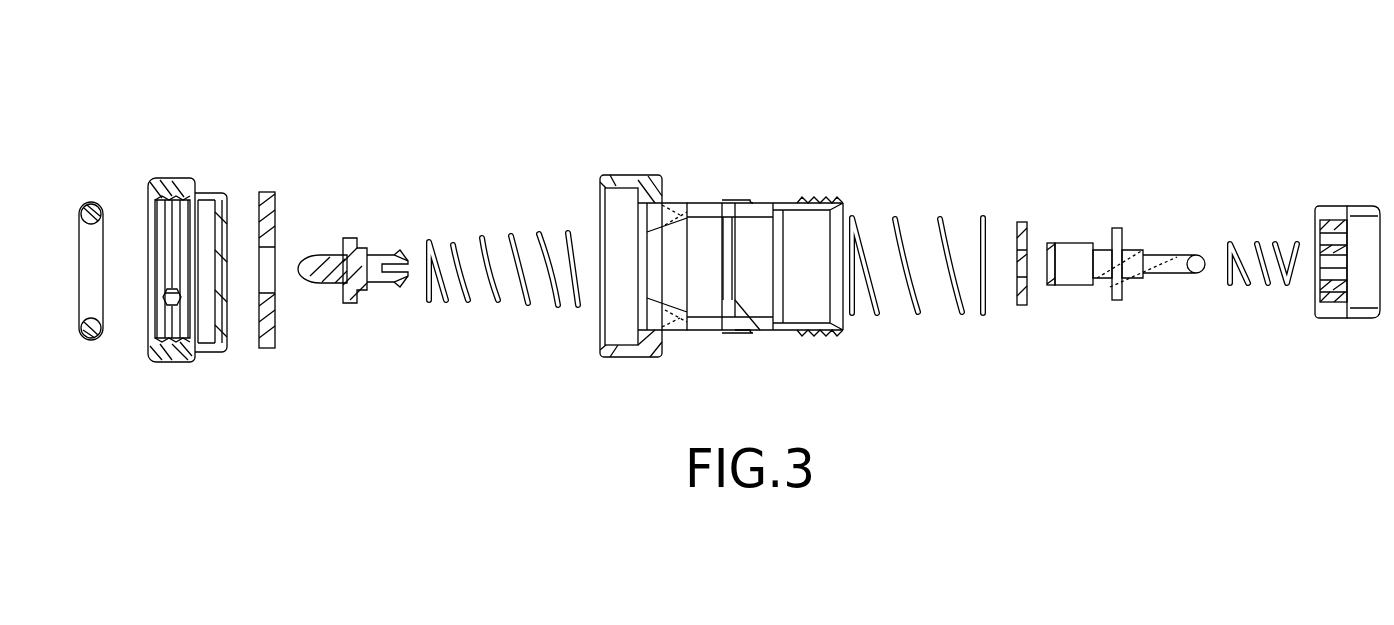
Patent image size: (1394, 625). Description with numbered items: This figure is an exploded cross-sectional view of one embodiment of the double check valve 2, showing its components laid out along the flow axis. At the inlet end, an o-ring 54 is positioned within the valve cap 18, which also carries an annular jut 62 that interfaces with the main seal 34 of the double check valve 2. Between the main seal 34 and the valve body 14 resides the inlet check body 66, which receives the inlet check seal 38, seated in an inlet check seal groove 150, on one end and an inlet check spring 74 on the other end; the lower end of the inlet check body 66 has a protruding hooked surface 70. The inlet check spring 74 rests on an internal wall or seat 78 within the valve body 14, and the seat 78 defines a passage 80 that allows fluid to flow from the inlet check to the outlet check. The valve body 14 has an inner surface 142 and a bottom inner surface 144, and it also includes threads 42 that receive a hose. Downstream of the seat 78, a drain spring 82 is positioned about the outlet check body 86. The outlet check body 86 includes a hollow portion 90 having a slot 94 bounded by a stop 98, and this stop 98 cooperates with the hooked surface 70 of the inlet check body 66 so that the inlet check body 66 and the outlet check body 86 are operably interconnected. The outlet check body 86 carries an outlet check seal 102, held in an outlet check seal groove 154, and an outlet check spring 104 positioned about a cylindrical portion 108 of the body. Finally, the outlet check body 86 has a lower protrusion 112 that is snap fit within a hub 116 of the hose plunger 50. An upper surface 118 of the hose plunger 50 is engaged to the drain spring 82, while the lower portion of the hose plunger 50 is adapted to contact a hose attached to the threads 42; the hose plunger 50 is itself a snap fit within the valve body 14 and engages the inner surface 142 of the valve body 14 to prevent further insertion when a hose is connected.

The double check valve 2 is at (519, 76).
The o-ring 54 is at (90, 200).
The valve cap 18 is at (205, 192).
The annular jut 62 is at (227, 206).
The main seal 34 is at (268, 350).
The inlet check seal 38 is at (345, 240).
The inlet check seal groove 150 is at (343, 262).
The inlet check body 66 is at (358, 304).
The hooked surface 70 is at (395, 252).
The inlet check spring 74 is at (498, 303).
The valve body 14 is at (643, 178).
The bottom inner surface 144 is at (640, 342).
The inner surface 142 is at (707, 300).
The passage 80 is at (732, 252).
The seat 78 is at (732, 300).
The threads 42 is at (822, 200).
The drain spring 82 is at (918, 313).
The outlet check seal 102 is at (1020, 306).
The outlet check body 86 is at (1145, 251).
The stop 98 is at (1050, 243).
The hollow portion 90 is at (1075, 264).
The slot 94 is at (1080, 286).
The outlet check seal groove 154 is at (1115, 237).
The cylindrical portion 108 is at (1160, 274).
The protrusion 112 is at (1200, 264).
The outlet check spring 104 is at (1232, 284).
The hose plunger 50 is at (1350, 209).
The upper surface 118 is at (1318, 216).
The hub 116 is at (1318, 291).